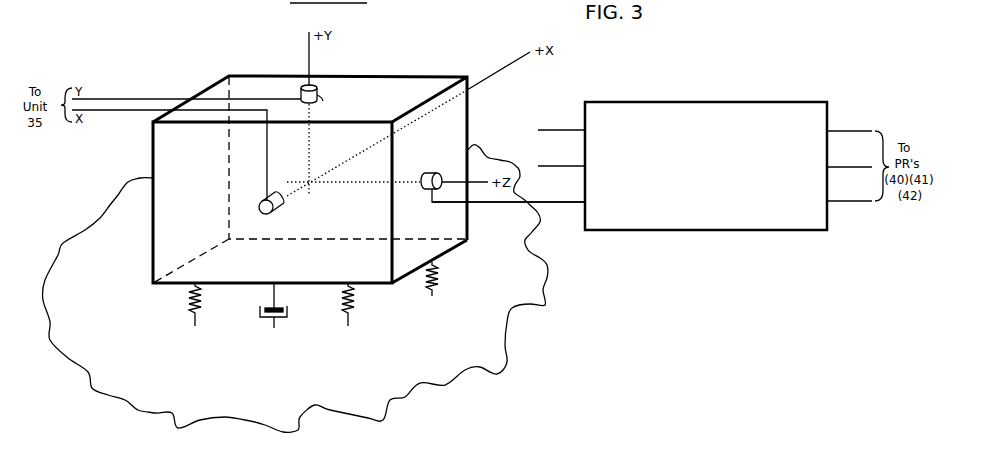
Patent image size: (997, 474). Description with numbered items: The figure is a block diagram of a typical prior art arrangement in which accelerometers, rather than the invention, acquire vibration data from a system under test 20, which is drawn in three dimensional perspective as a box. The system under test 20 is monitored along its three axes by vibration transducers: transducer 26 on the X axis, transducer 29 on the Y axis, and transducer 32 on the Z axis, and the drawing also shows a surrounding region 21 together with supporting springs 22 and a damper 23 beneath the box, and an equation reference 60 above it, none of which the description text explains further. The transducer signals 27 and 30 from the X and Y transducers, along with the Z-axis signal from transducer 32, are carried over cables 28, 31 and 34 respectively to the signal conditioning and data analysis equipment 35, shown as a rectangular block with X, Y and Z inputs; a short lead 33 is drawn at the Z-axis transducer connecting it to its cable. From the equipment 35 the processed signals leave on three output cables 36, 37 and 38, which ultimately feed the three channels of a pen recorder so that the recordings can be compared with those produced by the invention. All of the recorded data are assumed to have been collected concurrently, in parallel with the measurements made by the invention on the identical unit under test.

The system under test 20 is at (274, 74).
The foundation / environment 21 is at (138, 411).
The springs 22 is at (197, 326).
The damper 23 is at (284, 323).
The vibration transducer 26 is at (275, 208).
The transducer signal 27 is at (265, 202).
The cable 28 is at (269, 117).
The vibration transducer 29 is at (323, 101).
The transducer signal 30 is at (302, 99).
The cable 31 is at (272, 99).
The vibration transducer 32 is at (428, 173).
The accelerometer lead 33 is at (429, 198).
The cable 34 is at (566, 200).
The signal conditioning and data analysis equipment 35 is at (694, 100).
The cable 36 is at (849, 119).
The cable 37 is at (849, 158).
The cable 38 is at (849, 192).
The resonant frequency equation 60 is at (328, 13).